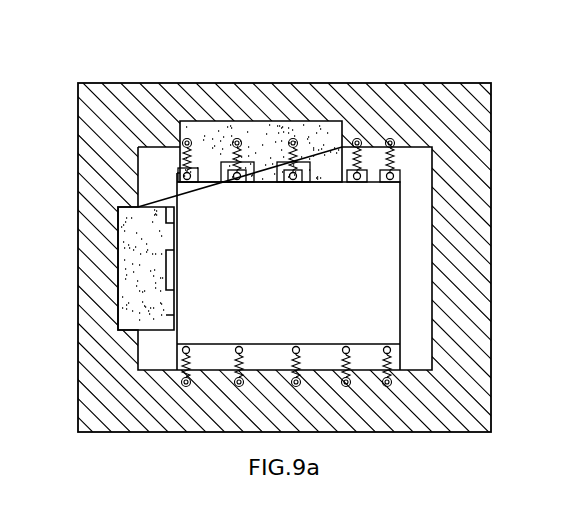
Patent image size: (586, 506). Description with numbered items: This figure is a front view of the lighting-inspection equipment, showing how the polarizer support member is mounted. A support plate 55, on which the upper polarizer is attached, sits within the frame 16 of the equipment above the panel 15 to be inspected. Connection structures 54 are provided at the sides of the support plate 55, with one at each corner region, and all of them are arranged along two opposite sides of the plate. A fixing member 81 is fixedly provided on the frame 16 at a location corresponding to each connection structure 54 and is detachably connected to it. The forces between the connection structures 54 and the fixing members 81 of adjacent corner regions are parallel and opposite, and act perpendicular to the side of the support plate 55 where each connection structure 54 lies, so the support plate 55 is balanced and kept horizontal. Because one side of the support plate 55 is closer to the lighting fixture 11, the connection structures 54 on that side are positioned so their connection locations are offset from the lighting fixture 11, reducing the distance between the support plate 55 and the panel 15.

The lighting fixture 11 is at (267, 128).
The panel 15 is at (140, 202).
The frame 16 is at (102, 319).
The connection structure 54 is at (178, 176).
The support plate 55 is at (378, 254).
The fixing member 81 is at (182, 143).